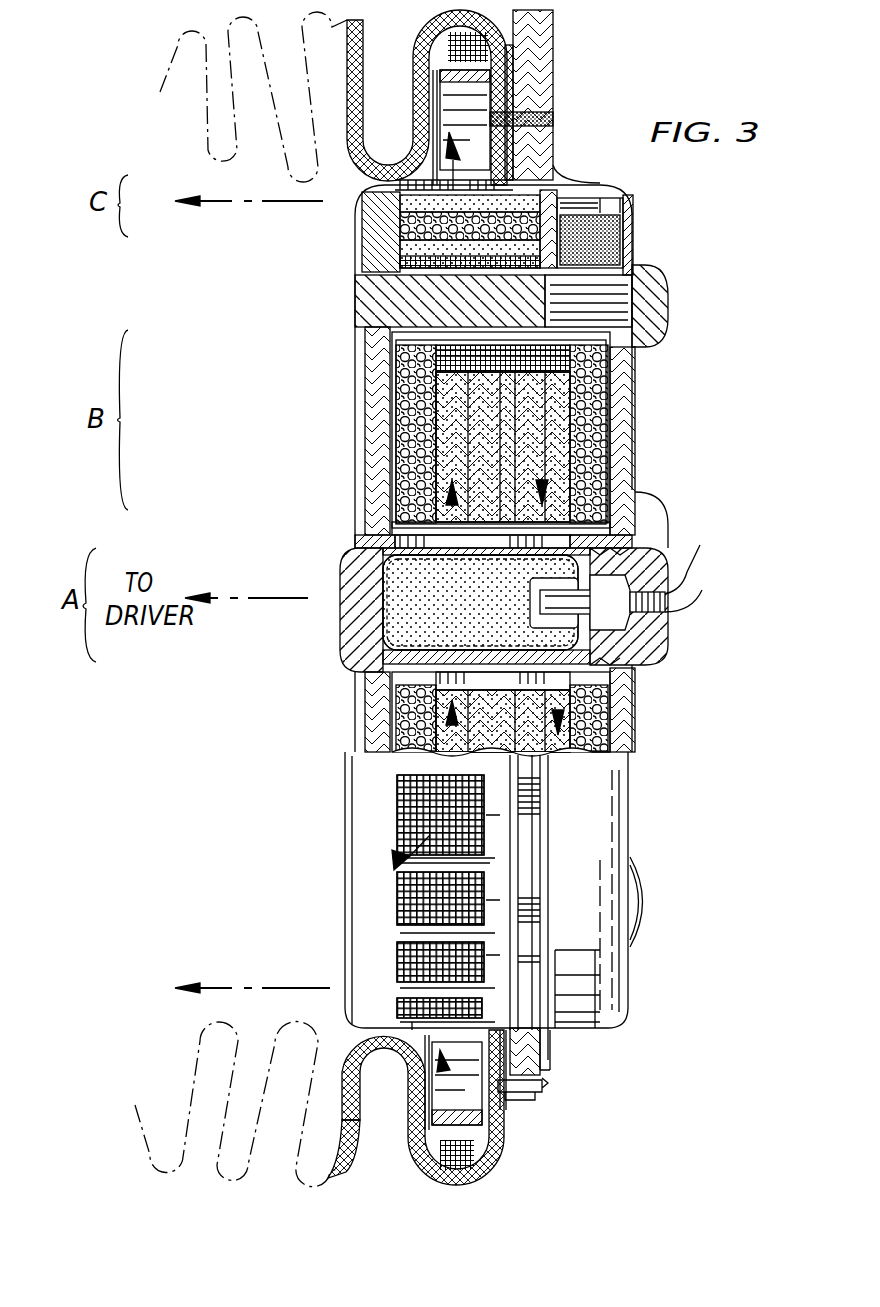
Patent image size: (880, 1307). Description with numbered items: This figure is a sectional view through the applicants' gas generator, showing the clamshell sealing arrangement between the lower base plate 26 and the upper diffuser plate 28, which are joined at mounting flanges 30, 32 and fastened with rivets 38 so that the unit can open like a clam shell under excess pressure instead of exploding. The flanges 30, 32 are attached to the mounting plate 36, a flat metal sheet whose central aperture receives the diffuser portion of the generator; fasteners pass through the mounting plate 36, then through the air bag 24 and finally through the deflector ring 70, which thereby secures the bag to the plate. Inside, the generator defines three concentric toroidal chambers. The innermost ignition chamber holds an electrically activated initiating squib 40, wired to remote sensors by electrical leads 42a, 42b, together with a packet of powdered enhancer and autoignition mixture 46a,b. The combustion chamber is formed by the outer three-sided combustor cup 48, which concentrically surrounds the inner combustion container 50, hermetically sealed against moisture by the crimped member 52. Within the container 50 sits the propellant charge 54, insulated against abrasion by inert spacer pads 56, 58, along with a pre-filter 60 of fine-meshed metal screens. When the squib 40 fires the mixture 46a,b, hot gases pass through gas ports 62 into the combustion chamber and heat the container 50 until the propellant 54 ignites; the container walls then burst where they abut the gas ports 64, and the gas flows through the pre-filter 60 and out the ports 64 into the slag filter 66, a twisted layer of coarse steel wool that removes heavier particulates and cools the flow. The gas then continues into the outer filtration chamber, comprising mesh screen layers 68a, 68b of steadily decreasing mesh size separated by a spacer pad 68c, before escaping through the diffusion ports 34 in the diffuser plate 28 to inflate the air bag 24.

The air bag 24 is at (414, 104).
The base plate 26 is at (593, 1013).
The diffuser plate 28 is at (355, 790).
The mounting flange 30 is at (553, 52).
The mounting flange 32 is at (528, 1075).
The diffusion ports 34 is at (398, 827).
The mounting plate 36 is at (468, 72).
The rivets 38 is at (367, 308).
The initiating squib 40 is at (668, 653).
The electrical lead 42a is at (704, 590).
The electrical lead 42b is at (700, 545).
The enhancer and autoignition mixture 46a,b is at (478, 650).
The combustor cup 48 is at (395, 398).
The inner combustion container 50 is at (617, 350).
The sealing member 52 is at (625, 408).
The propellant charge 54 is at (485, 462).
The spacer pad 56 is at (400, 455).
The spacer pad 58 is at (610, 450).
The pre-filter 60 is at (368, 302).
The gas ports 62 is at (390, 528).
The gas ports 64 is at (633, 338).
The slag filter 66 is at (620, 228).
The mesh screen layer 68a is at (402, 267).
The mesh screen layer 68b is at (400, 200).
The spacer pad 68c is at (402, 228).
The deflector ring 70 is at (455, 58).